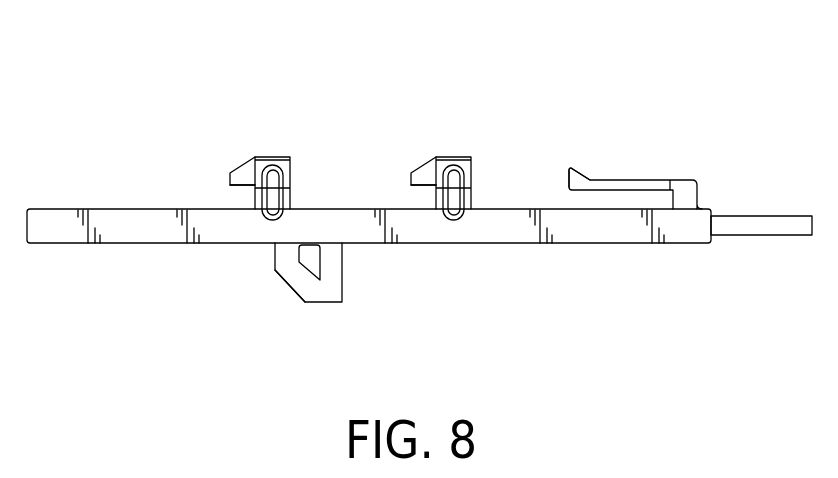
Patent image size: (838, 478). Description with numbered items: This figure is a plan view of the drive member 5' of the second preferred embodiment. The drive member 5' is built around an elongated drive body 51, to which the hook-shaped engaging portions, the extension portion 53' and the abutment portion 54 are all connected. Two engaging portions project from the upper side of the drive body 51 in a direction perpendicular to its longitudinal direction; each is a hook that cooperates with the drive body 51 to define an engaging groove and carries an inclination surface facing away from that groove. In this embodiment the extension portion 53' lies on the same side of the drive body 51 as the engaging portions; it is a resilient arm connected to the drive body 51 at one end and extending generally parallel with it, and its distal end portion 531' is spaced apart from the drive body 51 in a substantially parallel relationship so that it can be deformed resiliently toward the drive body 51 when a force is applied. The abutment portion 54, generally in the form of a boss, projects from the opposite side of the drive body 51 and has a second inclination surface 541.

The drive member 5' is at (97, 91).
The drive body 51 is at (55, 230).
The extension portion 53' is at (635, 158).
The distal end portion 531' is at (562, 127).
The abutment portion 54 is at (325, 292).
The second inclination surface 541 is at (290, 288).